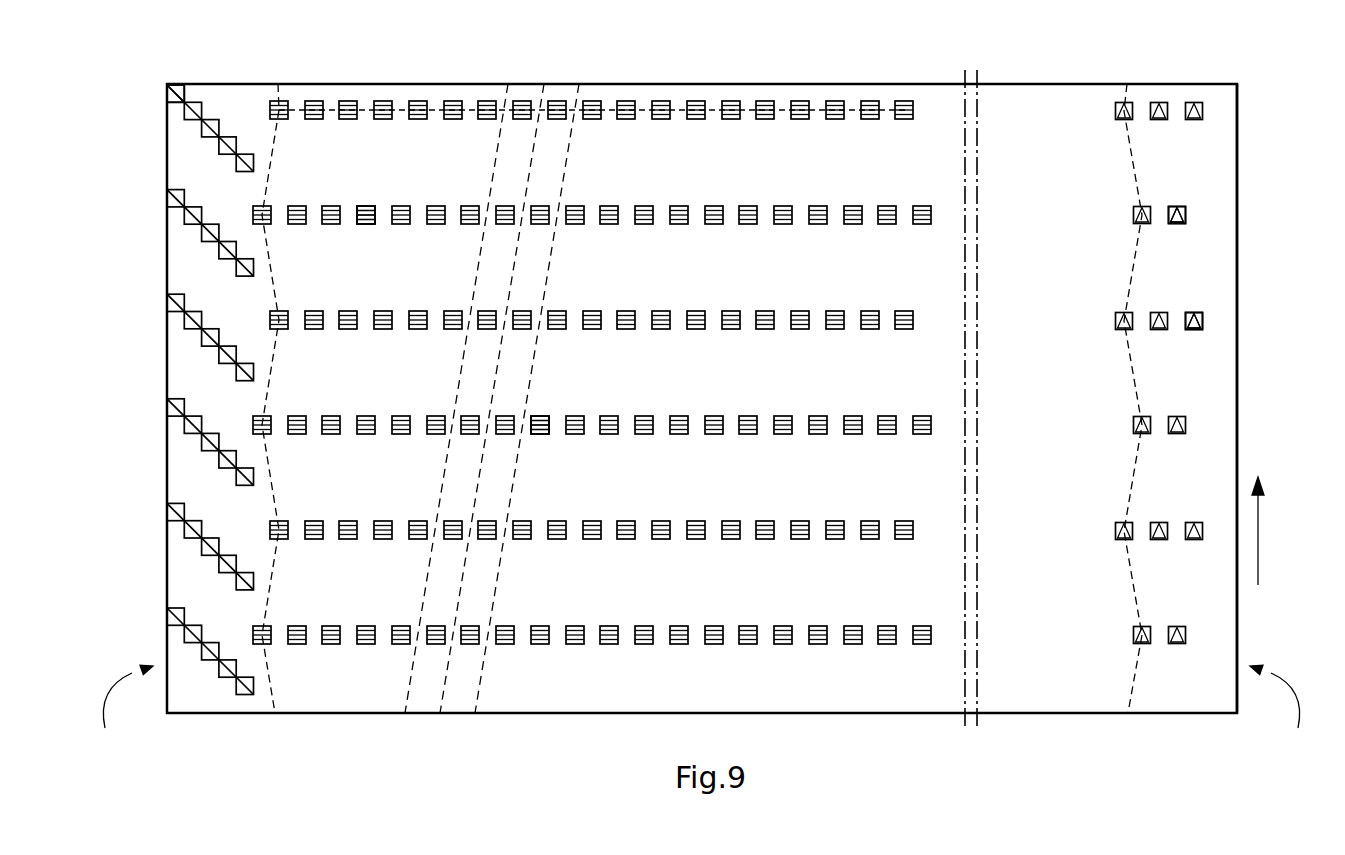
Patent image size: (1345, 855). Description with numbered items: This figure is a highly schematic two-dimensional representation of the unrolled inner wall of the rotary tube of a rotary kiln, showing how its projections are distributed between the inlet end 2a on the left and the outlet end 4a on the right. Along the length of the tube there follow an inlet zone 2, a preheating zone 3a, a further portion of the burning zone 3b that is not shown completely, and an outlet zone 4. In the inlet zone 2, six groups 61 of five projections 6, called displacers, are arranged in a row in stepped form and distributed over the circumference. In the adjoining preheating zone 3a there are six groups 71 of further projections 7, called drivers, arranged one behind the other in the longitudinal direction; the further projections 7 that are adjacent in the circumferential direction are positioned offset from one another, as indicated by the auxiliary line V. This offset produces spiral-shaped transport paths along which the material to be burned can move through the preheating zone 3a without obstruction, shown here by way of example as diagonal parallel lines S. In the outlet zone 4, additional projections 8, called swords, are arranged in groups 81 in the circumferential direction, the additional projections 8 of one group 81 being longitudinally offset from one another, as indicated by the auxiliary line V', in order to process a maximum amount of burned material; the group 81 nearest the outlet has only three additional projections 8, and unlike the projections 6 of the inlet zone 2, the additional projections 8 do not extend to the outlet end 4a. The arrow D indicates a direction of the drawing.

The inlet zone 2 is at (252, 70).
The inlet end 2a is at (122, 712).
The preheating zone 3a is at (932, 70).
The second section of processing zone 3b is at (1082, 70).
The outlet zone 4 is at (1237, 70).
The outlet end 4a is at (1280, 712).
The projections 6 is at (172, 96).
The groups 61 is at (177, 140).
The further projections 7 is at (367, 206).
The groups 71 is at (932, 440).
The additional projections 8 is at (1179, 206).
The groups 81 is at (1108, 90).
The parallel lines S is at (483, 241).
The auxiliary line V is at (293, 398).
The auxiliary line V' is at (1159, 398).
The direction of movement D is at (1258, 540).